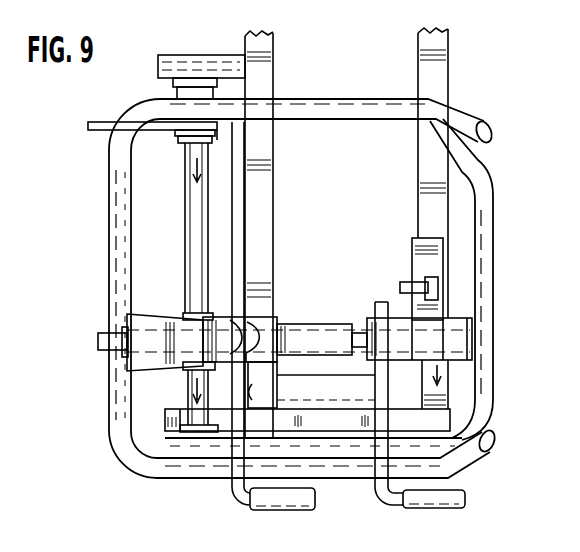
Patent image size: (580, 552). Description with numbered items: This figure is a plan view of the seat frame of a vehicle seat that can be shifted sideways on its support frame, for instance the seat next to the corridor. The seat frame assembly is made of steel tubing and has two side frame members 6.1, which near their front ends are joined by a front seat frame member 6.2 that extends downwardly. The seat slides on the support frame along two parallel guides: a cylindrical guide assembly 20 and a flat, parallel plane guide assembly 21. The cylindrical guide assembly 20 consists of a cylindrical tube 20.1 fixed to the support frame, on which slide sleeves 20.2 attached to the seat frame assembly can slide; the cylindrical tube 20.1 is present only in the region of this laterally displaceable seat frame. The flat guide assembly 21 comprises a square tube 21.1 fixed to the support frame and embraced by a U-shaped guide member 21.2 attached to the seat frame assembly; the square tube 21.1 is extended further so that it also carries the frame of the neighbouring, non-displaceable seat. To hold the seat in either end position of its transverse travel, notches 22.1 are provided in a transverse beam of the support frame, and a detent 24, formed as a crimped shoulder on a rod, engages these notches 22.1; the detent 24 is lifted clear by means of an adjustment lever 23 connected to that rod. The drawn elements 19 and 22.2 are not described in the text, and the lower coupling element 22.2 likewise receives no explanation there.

The side frame members 6.1 is at (352, 107).
The front seat frame member 6.2 is at (478, 292).
The hydraulic cylinder 19 is at (434, 498).
The cylindrical guide assembly 20 is at (187, 311).
The cylindrical tube 20.1 is at (190, 203).
The slide sleeves 20.2 is at (182, 141).
The parallel plane guide assembly 21 is at (435, 237).
The square tube 21.1 is at (441, 73).
The U-shaped guide member 21.2 is at (432, 262).
The notches 22.1 is at (256, 338).
The lower coupling member 22.2 is at (252, 397).
The adjustment lever 23 is at (273, 503).
The detent 24 is at (256, 338).